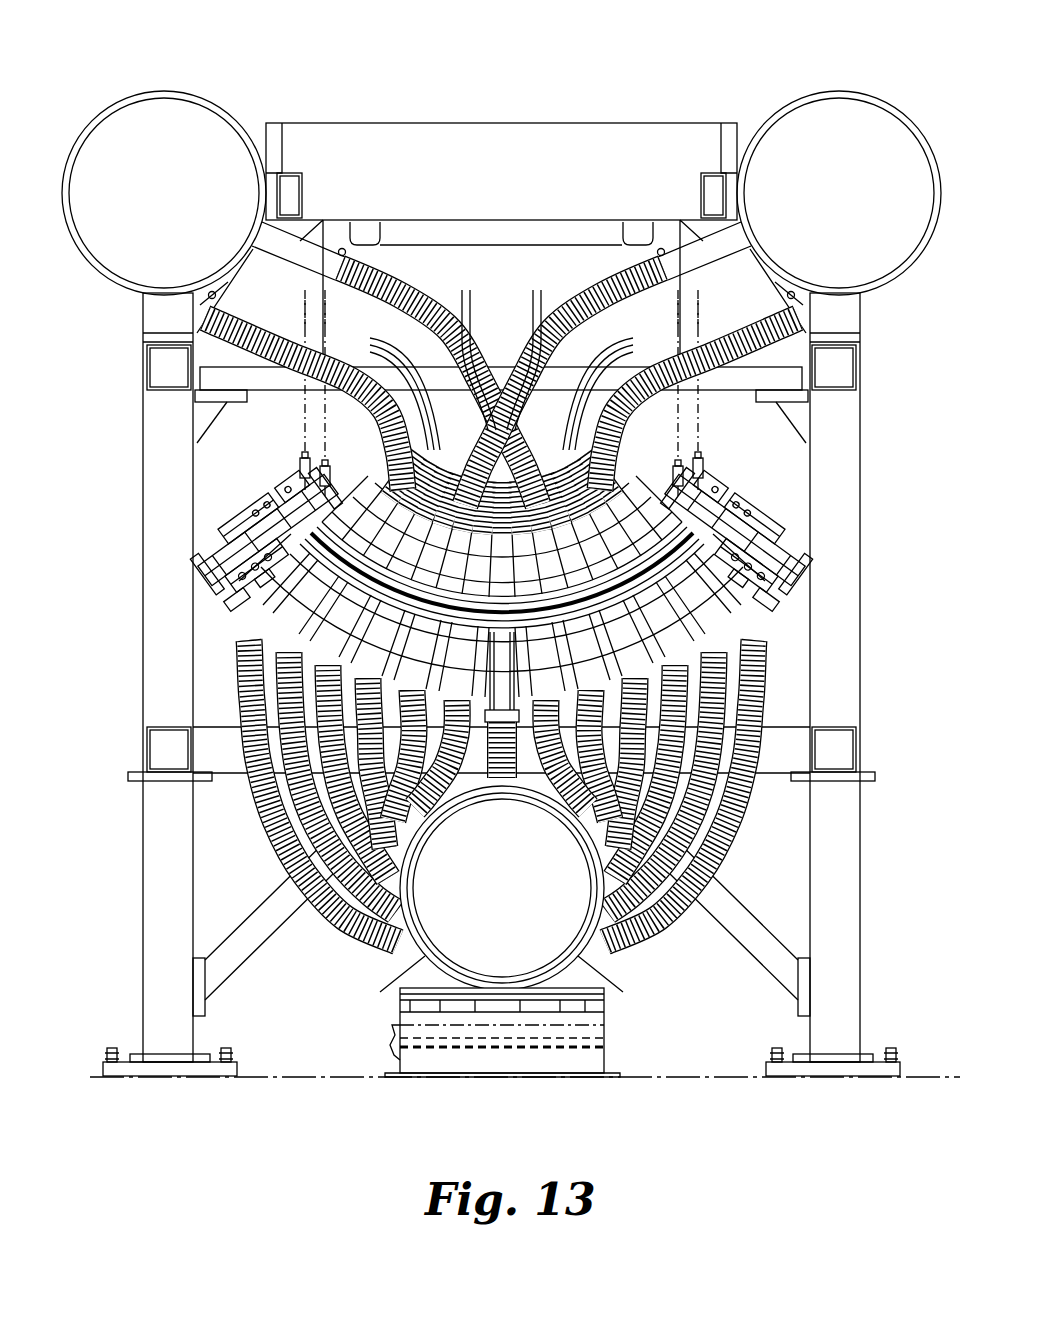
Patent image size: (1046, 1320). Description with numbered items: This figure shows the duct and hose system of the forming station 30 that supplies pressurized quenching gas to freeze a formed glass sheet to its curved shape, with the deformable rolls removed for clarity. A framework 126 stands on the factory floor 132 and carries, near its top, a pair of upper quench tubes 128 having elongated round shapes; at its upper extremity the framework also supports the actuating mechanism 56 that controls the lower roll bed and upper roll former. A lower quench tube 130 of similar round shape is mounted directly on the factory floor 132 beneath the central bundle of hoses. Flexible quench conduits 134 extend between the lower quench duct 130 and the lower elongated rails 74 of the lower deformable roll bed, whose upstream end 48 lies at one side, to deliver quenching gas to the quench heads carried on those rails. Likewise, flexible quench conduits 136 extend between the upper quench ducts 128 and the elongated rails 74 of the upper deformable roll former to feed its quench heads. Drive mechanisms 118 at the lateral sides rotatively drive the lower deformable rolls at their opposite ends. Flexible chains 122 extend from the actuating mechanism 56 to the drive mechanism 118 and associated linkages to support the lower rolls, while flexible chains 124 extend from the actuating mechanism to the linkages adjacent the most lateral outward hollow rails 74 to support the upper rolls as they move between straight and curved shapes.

The forming station 30 is at (713, 72).
The actuating mechanism 56 is at (533, 140).
The upper quench tubes 128 is at (112, 105).
The flexible quench conduits 136 is at (506, 356).
The elongated rails 74 is at (382, 524).
The upstream end 48 is at (566, 540).
The drive mechanisms 118 is at (226, 528).
The flexible chains 122 is at (305, 415).
The flexible chains 124 is at (323, 433).
The framework 126 is at (866, 604).
The flexible quench conduits 134 is at (298, 874).
The lower quench tube 130 is at (410, 977).
The factory floor 132 is at (280, 1077).